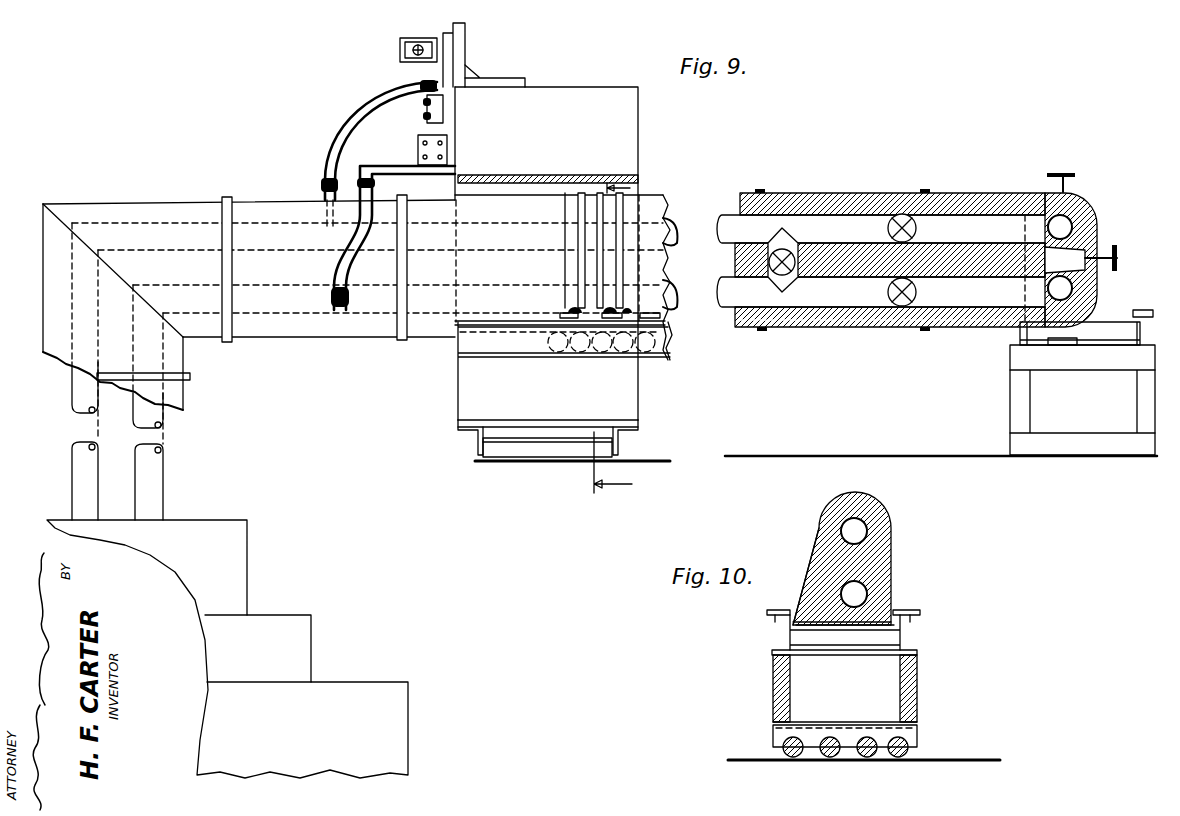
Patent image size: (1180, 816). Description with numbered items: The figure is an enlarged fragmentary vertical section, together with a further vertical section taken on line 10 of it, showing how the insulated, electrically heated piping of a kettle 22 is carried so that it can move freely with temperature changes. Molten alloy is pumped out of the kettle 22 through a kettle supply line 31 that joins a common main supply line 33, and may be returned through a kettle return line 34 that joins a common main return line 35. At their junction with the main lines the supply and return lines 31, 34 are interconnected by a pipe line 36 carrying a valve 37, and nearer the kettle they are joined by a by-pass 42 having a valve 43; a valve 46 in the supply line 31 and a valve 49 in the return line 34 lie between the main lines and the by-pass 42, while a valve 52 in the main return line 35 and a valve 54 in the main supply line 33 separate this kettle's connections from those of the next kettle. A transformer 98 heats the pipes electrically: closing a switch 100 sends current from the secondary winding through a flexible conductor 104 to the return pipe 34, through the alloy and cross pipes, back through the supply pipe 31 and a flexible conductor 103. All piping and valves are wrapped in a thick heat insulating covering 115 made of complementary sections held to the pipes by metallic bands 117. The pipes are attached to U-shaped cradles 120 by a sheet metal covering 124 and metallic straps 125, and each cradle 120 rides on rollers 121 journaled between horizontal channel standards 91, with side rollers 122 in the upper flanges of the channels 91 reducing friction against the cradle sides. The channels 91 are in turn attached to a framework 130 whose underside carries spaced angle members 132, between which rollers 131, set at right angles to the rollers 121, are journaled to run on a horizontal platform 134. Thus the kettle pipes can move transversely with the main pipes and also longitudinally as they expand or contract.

In FIG. 9, the section line 10— 10 is at (613, 334).
In FIG. 9, the kettle 22 is at (372, 682).
In FIG. 9, the kettle supply line 31 is at (160, 408).
In FIG. 10, the kettle supply line 31 is at (888, 586).
In FIG. 9, the main supply line 33 is at (1010, 329).
In FIG. 9, the kettle return line 34 is at (80, 396).
In FIG. 10, the kettle return line 34 is at (872, 528).
In FIG. 9, the main return line 35 is at (1085, 214).
In FIG. 9, the pipe line 36 is at (1100, 244).
In FIG. 9, the valve 37 is at (1105, 289).
In FIG. 9, the by-pass 42 is at (770, 279).
In FIG. 9, the valve 43 is at (783, 276).
In FIG. 9, the valve 46 is at (902, 304).
In FIG. 9, the valve 49 is at (915, 220).
In FIG. 9, the valve 52 is at (1072, 177).
In FIG. 9, the valve 54 is at (1075, 347).
In FIG. 9, the channel standard 91 is at (462, 341).
In FIG. 10, the channel standard 91 is at (790, 633).
In FIG. 9, the transformer 98 is at (565, 91).
In FIG. 9, the switch 100 is at (407, 51).
In FIG. 9, the flexible conductor 103 is at (377, 208).
In FIG. 9, the flexible conductor 104 is at (346, 115).
In FIG. 9, the heat insulating covering 115 is at (978, 192).
In FIG. 10, the heat insulating covering 115 is at (893, 554).
In FIG. 9, the metallic band 117 is at (228, 198).
In FIG. 9, the cradle 120 is at (667, 327).
In FIG. 9, the roller 121 is at (610, 354).
In FIG. 10, the roller 121 is at (822, 640).
In FIG. 9, the roller 122 is at (606, 311).
In FIG. 10, the roller 122 is at (768, 614).
In FIG. 9, the sheet metal covering 124 is at (629, 269).
In FIG. 9, the metallic strap 125 is at (600, 243).
In FIG. 10, the metallic strap 125 is at (883, 498).
In FIG. 9, the framework 130 is at (470, 389).
In FIG. 9, the roller 131 is at (541, 453).
In FIG. 10, the roller 131 is at (830, 745).
In FIG. 9, the angle member 132 is at (478, 442).
In FIG. 9, the horizontal platform 134 is at (812, 456).